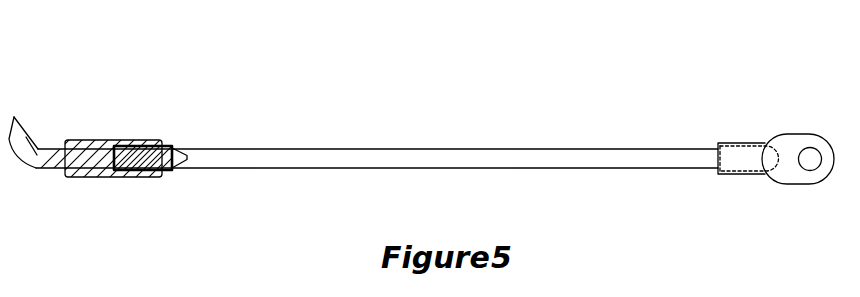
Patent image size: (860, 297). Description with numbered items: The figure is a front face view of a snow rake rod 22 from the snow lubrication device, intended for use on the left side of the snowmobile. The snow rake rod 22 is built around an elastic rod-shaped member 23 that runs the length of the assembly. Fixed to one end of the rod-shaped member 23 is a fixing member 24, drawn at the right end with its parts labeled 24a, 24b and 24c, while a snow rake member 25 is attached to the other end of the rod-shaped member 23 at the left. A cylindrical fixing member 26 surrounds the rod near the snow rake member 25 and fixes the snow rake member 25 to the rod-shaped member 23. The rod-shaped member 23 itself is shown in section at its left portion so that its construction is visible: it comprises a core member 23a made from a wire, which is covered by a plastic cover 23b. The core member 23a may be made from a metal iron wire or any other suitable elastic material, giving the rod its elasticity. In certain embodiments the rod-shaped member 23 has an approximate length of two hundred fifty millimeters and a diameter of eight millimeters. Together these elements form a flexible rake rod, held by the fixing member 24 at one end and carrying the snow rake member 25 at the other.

The snow rake rod 22 is at (660, 63).
The rod-shaped member 23 is at (223, 89).
The core member 23a is at (179, 148).
The plastic cover 23b is at (158, 138).
The fixing member 24 is at (798, 94).
The eyelet ring 24a is at (783, 142).
The ferrule 24b is at (740, 144).
The eyelet hole 24c is at (799, 158).
The snow rake member 25 is at (19, 127).
The cylindrical fixing member 26 is at (96, 139).